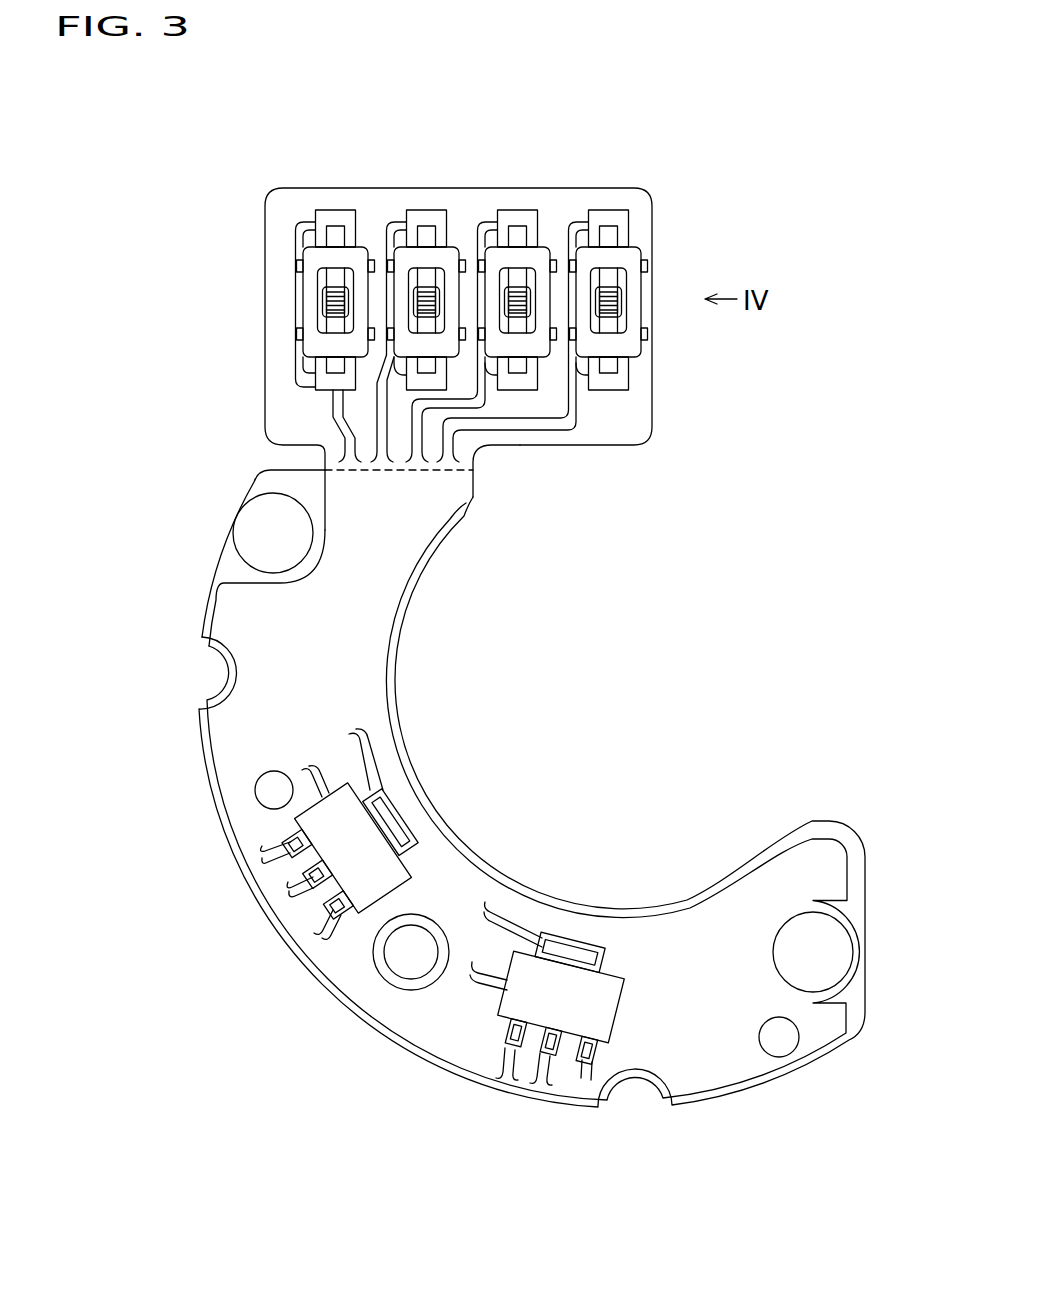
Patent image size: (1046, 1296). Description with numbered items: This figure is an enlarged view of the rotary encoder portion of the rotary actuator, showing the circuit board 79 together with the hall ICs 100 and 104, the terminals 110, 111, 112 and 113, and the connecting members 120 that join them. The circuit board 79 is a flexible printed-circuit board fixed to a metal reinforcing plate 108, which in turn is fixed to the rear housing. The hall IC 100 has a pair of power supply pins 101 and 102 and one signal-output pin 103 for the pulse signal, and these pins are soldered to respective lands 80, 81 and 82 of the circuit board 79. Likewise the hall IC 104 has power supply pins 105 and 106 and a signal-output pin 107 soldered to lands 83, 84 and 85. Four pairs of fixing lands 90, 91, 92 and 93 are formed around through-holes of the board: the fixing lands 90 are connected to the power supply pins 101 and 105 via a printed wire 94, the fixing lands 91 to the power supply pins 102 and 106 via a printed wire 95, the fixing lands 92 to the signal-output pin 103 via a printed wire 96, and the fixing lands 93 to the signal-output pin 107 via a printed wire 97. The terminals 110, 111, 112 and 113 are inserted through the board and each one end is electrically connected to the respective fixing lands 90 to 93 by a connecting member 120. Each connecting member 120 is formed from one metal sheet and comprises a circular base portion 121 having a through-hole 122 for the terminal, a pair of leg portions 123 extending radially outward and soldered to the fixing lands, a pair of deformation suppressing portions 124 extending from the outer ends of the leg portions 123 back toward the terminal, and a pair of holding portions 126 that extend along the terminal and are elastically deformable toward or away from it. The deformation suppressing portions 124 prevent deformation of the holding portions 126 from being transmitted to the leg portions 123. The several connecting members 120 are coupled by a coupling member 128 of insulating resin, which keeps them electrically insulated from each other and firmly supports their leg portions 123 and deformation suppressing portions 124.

The circuit board 79 is at (300, 672).
The land 80 is at (261, 851).
The land 81 is at (300, 906).
The land 82 is at (301, 961).
The land 83 is at (510, 1076).
The land 84 is at (552, 1080).
The land 85 is at (586, 1070).
The fixing lands 90 is at (277, 314).
The fixing lands 91 is at (432, 383).
The fixing lands 92 is at (518, 385).
The fixing lands 93 is at (646, 370).
The printed wire 94 is at (381, 462).
The printed wire 95 is at (414, 462).
The printed wire 96 is at (449, 462).
The printed wire 97 is at (488, 447).
The hall IC 100 is at (291, 889).
The power supply pin 101 is at (290, 833).
The power supply pin 102 is at (308, 876).
The signal-output pin 103 is at (338, 913).
The hall IC 104 is at (518, 1056).
The power supply pin 105 is at (504, 1058).
The power supply pin 106 is at (546, 1060).
The signal-output pin 107 is at (596, 1060).
The metal reinforcing plate 108 is at (228, 568).
The terminal 110 is at (373, 270).
The terminal 111 is at (462, 270).
The terminal 112 is at (552, 268).
The terminal 113 is at (613, 300).
The connecting member 120 is at (338, 214).
The base portion 121 is at (328, 327).
The through-hole 122 is at (333, 305).
The leg portion 123 is at (331, 224).
The deformation suppressing portion 124 is at (330, 278).
The holding portion 126 is at (332, 288).
The coupling member 128 is at (629, 345).